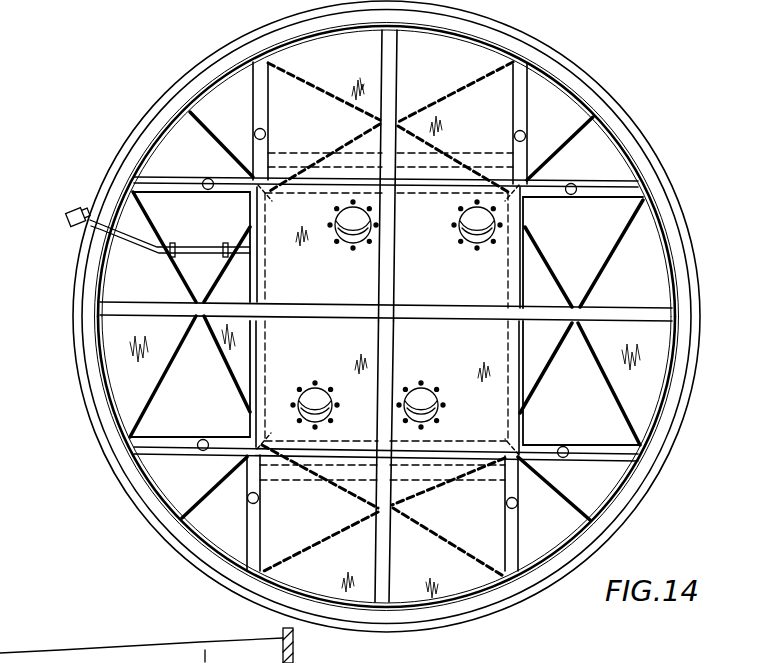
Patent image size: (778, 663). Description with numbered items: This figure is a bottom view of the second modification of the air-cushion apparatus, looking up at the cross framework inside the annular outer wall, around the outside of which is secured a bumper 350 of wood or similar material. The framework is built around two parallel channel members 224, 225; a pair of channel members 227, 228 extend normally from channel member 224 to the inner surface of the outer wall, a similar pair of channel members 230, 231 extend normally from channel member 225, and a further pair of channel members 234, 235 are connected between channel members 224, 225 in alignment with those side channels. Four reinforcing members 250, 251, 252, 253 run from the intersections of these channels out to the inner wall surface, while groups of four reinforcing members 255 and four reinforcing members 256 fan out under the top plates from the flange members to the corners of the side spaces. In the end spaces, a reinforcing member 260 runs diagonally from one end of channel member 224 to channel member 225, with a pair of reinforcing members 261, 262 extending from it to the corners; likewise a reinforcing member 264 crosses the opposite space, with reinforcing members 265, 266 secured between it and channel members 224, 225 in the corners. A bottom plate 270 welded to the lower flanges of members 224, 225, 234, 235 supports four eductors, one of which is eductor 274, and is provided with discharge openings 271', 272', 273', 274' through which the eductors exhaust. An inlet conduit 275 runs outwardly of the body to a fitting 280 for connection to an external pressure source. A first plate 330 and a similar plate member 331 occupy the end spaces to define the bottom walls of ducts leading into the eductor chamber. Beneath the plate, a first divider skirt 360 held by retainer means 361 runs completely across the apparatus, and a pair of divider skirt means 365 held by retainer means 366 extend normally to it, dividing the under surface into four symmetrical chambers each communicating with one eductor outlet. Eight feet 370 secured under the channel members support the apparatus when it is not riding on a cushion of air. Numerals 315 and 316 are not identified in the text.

The channel member 224 is at (264, 92).
The channel member 225 is at (524, 105).
The channel member 227 is at (164, 184).
The channel member 228 is at (183, 449).
The channel member 230 is at (611, 189).
The channel member 231 is at (590, 453).
The channel member 234 is at (428, 186).
The channel member 235 is at (339, 452).
The reinforcing member 250 is at (207, 128).
The reinforcing member 251 is at (568, 148).
The reinforcing member 252 is at (555, 497).
The reinforcing member 253 is at (214, 494).
The reinforcing members 255 is at (156, 221).
The reinforcing members 256 is at (597, 280).
The reinforcing member 260 is at (317, 81).
The reinforcing member 261 is at (360, 146).
The reinforcing member 262 is at (440, 98).
The reinforcing member 264 is at (327, 539).
The reinforcing member 265 is at (420, 489).
The reinforcing member 266 is at (424, 536).
The bottom plate 270 is at (438, 344).
The discharge opening 271' is at (317, 389).
The discharge opening 272' is at (350, 236).
The discharge opening 273' is at (421, 387).
The eductor 274 is at (429, 255).
The discharge opening 274' is at (477, 238).
The inlet conduit 275 is at (137, 248).
The fitting 280 is at (72, 229).
The upper horizontal stiffeners 315 is at (473, 163).
The lower horizontal stiffeners 316 is at (300, 483).
The first plate 330 is at (300, 52).
The plate member 331 is at (460, 586).
The bumper 350 is at (661, 457).
The first divider skirt 360 is at (379, 297).
The retainer means 361 is at (393, 277).
The divider skirt means 365 is at (271, 301).
The retainer means 366 is at (292, 318).
The feet 370 is at (267, 134).